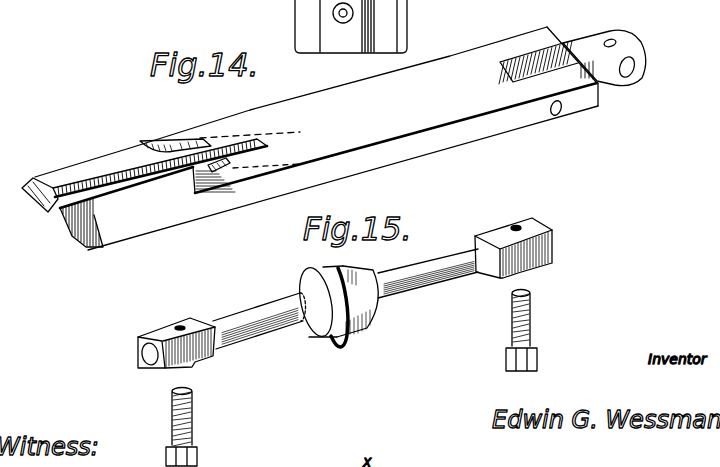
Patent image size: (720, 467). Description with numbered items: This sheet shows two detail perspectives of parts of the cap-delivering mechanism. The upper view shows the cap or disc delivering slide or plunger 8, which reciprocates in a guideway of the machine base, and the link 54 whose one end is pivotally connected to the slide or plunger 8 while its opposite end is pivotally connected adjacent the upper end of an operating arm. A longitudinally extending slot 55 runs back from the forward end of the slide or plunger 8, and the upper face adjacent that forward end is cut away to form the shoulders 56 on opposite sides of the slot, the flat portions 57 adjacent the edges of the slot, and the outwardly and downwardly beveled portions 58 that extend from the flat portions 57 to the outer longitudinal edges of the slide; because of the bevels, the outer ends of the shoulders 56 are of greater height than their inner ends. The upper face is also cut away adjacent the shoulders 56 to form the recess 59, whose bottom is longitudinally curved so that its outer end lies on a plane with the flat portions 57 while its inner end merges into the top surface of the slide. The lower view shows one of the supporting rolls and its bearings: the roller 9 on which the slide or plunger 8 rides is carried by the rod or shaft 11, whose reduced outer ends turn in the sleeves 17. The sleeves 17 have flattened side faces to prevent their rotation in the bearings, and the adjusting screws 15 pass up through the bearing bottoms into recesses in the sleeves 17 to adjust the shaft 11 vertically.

In FIG. 14, the cap or disc delivering slide or plunger 8 is at (396, 160).
In FIG. 14, the link 54 is at (610, 36).
In FIG. 14, the longitudinally extending slot 55 is at (265, 146).
In FIG. 14, the shoulders 56 is at (197, 203).
In FIG. 14, the flat portions 57 is at (50, 223).
In FIG. 14, the outwardly and downwardly beveled portions 58 is at (104, 163).
In FIG. 14, the recess 59 is at (188, 148).
In FIG. 15, the roller 9 is at (352, 330).
In FIG. 15, the rod or shaft 11 is at (291, 326).
In FIG. 15, the adjusting screw 15 is at (195, 402).
In FIG. 15, the sleeves 17 is at (203, 323).